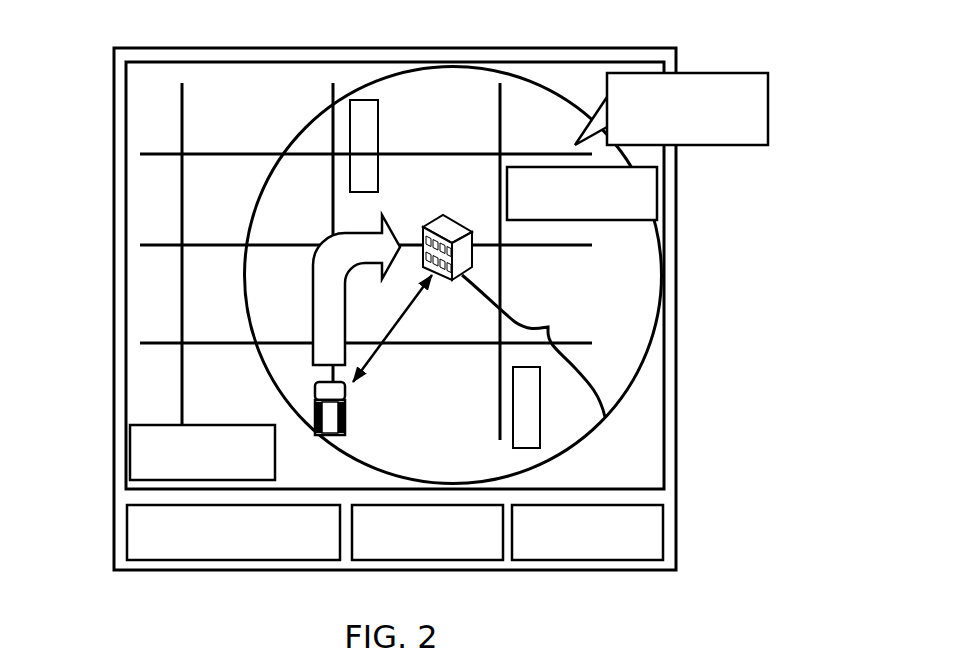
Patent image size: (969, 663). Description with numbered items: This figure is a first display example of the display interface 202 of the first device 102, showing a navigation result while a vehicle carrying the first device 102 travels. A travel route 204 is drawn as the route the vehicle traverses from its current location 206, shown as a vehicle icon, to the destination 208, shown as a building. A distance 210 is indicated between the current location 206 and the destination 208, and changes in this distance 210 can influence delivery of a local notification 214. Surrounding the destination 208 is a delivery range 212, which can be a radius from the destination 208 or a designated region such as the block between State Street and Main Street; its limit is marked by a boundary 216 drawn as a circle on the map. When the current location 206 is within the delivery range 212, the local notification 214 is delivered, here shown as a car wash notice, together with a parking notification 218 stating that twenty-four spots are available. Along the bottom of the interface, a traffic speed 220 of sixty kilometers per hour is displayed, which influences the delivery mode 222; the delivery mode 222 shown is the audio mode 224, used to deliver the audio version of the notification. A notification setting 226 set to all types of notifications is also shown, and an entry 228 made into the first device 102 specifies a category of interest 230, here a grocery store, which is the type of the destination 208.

The first device 102 is at (153, 36).
The display interface 202 is at (285, 83).
The travel route 204 is at (330, 337).
The current location 206 is at (325, 417).
The destination 208 is at (463, 263).
The distance 210 is at (392, 342).
The delivery range 212 is at (548, 327).
The local notification 214 is at (657, 192).
The boundary 216 is at (367, 68).
The parking notification 218 is at (693, 73).
The traffic speed 220 is at (483, 550).
The delivery mode 222 is at (142, 453).
The audio mode 224 is at (176, 426).
The notification setting 226 is at (652, 543).
The entry 228 is at (133, 543).
The category of interest 230 is at (166, 511).